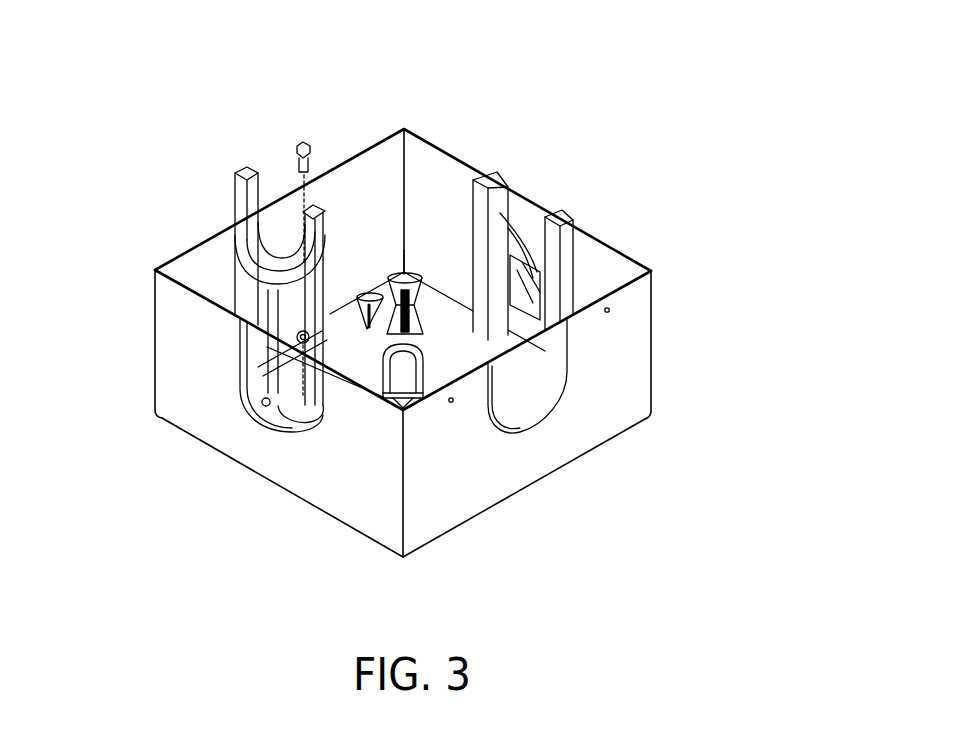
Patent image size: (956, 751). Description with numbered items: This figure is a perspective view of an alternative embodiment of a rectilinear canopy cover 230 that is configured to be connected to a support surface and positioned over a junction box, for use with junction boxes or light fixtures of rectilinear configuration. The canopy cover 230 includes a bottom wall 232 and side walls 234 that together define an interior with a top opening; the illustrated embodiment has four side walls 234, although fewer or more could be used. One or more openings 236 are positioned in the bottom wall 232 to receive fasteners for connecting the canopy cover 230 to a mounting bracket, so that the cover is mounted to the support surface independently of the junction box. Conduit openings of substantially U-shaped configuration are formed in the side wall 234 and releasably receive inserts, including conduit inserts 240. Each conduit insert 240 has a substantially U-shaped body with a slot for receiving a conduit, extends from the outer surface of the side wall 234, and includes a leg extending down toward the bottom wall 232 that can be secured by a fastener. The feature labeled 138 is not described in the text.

The rectilinear canopy cover 230 is at (757, 263).
The bottom wall 232 is at (522, 493).
The side wall 234 is at (340, 483).
The opening 236 is at (415, 315).
The conduit insert 240 is at (242, 193).
The slot in wall 138 is at (533, 367).